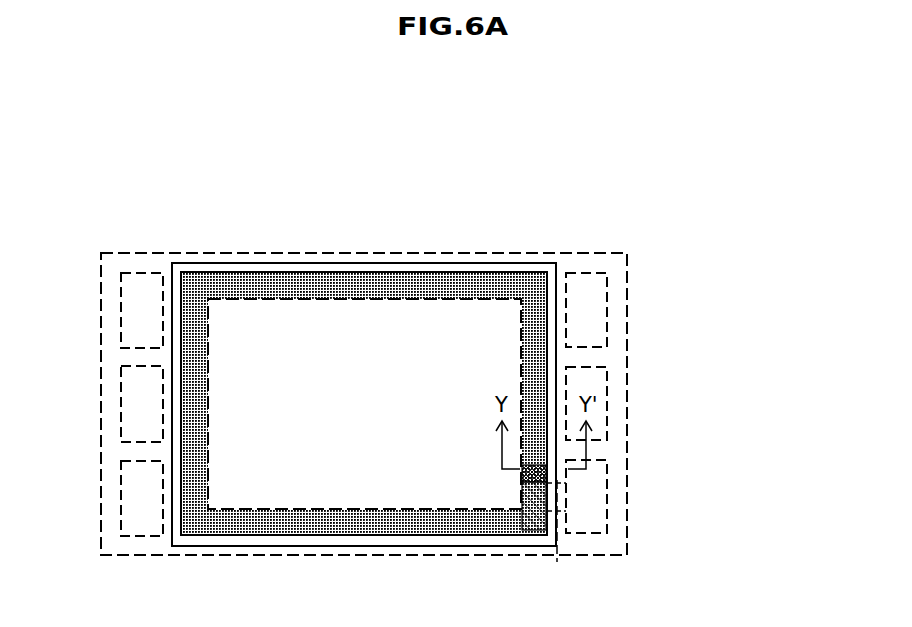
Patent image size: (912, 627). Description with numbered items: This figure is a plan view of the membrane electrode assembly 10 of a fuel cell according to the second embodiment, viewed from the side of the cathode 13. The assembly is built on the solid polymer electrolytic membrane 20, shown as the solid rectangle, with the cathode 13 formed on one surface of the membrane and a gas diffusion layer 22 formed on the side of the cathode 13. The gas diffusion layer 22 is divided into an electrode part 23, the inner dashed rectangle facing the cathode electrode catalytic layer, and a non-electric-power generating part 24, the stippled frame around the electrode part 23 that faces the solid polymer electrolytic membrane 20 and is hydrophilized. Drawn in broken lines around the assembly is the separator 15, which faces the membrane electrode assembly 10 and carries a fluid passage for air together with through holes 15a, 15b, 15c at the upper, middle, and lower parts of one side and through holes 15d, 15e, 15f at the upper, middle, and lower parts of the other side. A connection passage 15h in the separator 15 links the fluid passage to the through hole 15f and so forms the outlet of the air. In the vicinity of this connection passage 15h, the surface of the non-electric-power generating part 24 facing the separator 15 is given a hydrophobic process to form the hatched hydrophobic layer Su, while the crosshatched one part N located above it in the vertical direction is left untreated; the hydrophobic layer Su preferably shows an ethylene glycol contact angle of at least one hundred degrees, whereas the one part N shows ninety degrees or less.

The membrane electrode assembly 10 is at (369, 157).
The solid polymer electrolytic membrane 20 is at (229, 263).
The electrode part 23 is at (370, 318).
The non-electric-power generating part 24 is at (426, 283).
The gas diffusion layer 22 is at (672, 127).
The cathode 13 is at (356, 511).
The separator 15 is at (341, 253).
The through hole 15a is at (140, 320).
The through hole 15b is at (140, 413).
The through hole 15c is at (140, 521).
The through hole 15d is at (593, 309).
The through hole 15e is at (593, 384).
The through hole 15f is at (597, 516).
The connection passage 15h is at (563, 536).
The one part N is at (522, 481).
The hydrophobic layer Su is at (532, 527).